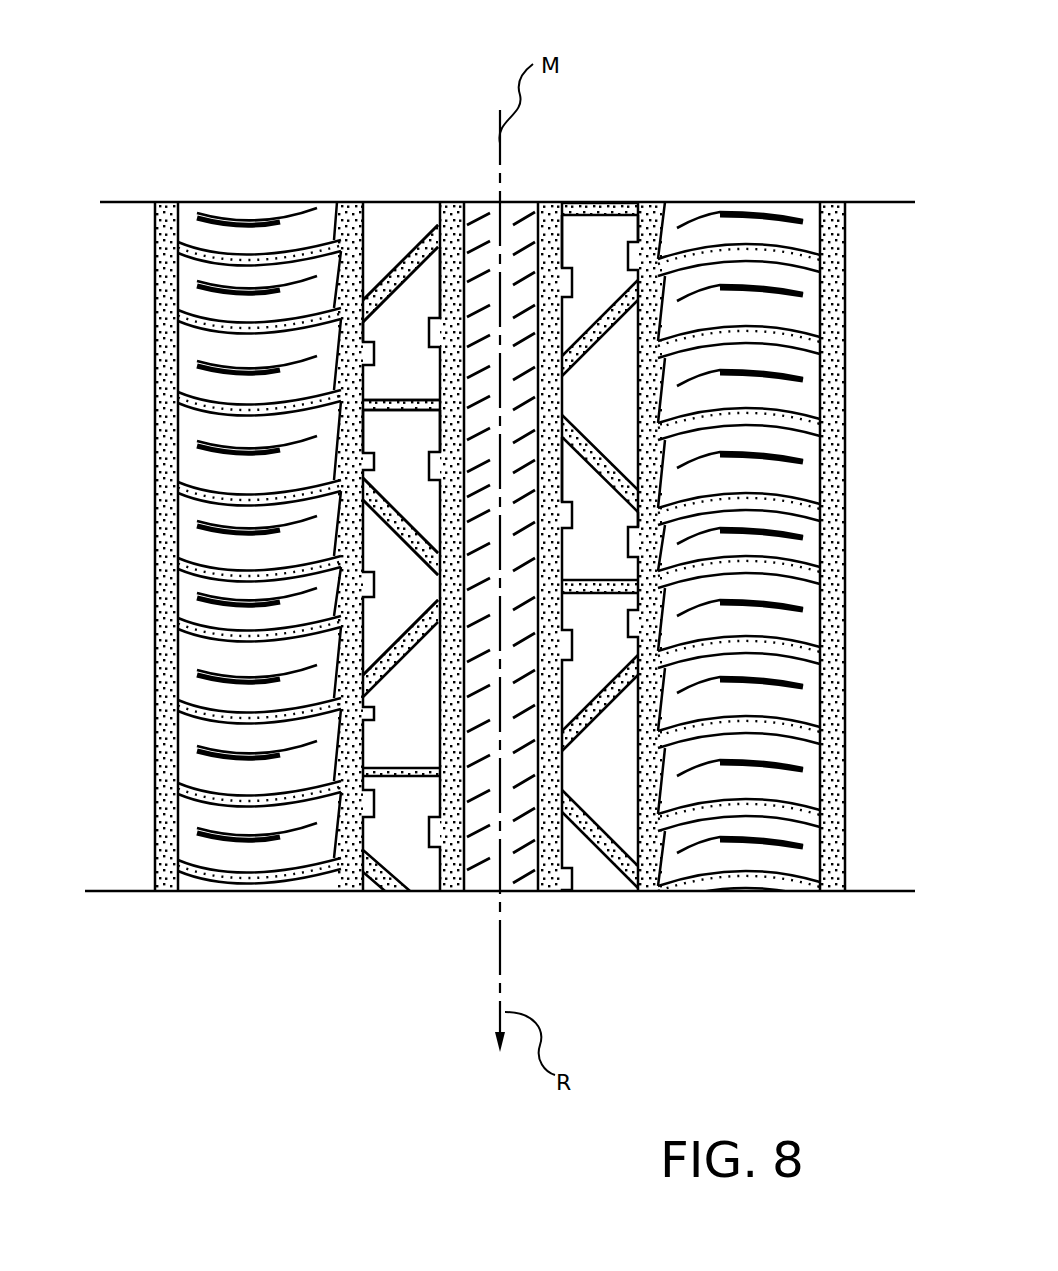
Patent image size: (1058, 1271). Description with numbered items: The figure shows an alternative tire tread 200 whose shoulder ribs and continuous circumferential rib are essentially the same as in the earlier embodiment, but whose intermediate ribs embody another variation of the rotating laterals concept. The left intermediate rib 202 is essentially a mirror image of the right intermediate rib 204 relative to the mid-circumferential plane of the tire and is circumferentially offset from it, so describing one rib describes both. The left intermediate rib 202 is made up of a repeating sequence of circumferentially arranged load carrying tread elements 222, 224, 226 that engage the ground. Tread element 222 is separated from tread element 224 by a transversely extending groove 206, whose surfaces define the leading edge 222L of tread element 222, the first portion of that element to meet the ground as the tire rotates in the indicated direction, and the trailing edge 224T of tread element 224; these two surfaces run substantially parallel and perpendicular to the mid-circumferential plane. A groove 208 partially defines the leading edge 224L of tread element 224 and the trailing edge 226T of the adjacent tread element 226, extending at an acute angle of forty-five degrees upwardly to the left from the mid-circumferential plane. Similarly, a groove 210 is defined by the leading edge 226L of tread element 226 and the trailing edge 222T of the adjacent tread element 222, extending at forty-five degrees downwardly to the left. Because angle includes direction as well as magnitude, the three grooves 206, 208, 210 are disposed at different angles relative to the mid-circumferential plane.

The tread 200 is at (700, 112).
The left intermediate rib 202 is at (405, 908).
The right intermediate rib 204 is at (590, 910).
The transversely extending groove 206 is at (603, 216).
The groove 208 is at (340, 541).
The groove 210 is at (362, 306).
The tread element 222 is at (425, 385).
The tread element 224 is at (422, 483).
The tread element 226 is at (424, 236).
The leading edge 222L is at (372, 386).
The trailing edge 222T is at (420, 270).
The trailing edge 224T is at (398, 413).
The leading edge 224L is at (400, 525).
The trailing edge 226T is at (410, 548).
The leading edge 226L is at (397, 640).